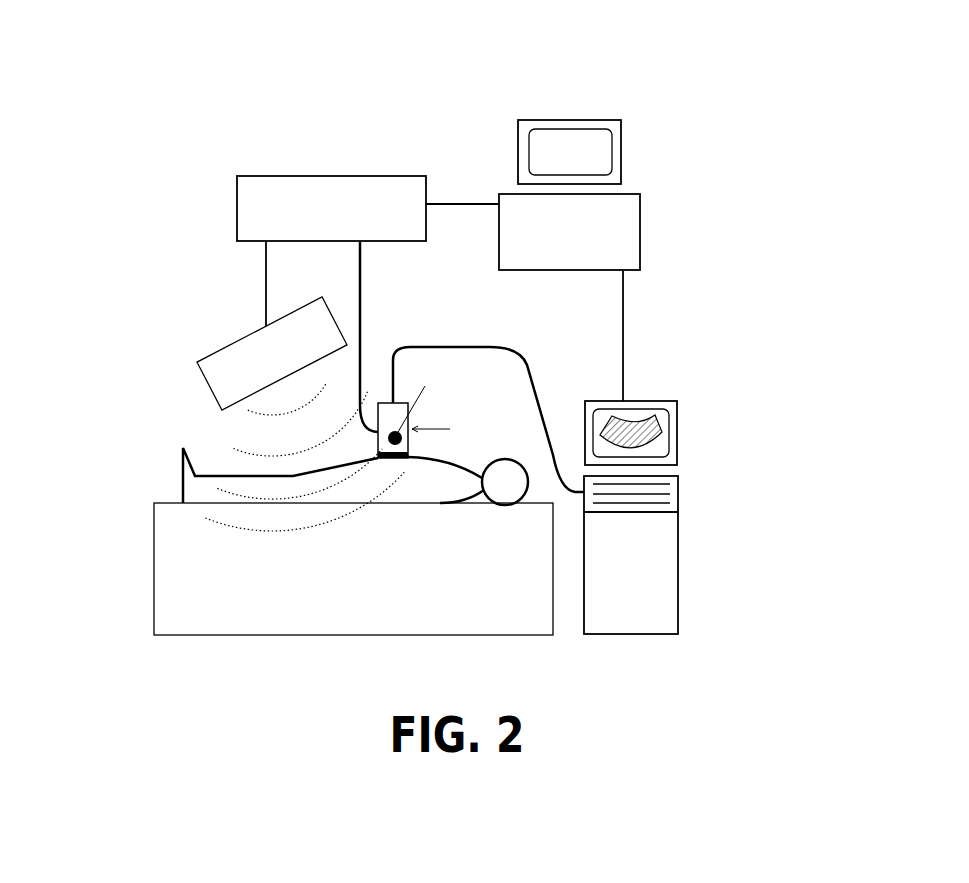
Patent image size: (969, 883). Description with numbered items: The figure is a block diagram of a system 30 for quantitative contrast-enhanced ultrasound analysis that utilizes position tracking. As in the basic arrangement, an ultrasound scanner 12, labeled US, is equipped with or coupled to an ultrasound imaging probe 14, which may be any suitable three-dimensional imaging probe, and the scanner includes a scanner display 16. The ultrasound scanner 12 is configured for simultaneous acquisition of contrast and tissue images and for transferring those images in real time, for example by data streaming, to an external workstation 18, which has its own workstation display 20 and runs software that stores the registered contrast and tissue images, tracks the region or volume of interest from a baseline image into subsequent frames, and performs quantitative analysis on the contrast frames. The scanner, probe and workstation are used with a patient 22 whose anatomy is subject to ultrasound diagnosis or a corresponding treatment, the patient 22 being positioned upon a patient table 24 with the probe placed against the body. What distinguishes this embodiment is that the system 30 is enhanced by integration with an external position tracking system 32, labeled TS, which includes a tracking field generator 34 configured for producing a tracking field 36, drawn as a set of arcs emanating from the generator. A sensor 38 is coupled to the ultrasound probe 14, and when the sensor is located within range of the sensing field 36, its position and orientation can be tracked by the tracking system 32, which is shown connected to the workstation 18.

The ultrasound scanner 12 is at (666, 549).
The ultrasound imaging probe 14 is at (405, 447).
The scanner display 16 is at (666, 422).
The workstation 18 is at (632, 232).
The workstation display 20 is at (600, 148).
The patient 22 is at (198, 490).
The patient table 24 is at (173, 560).
The system 30 is at (445, 35).
The position tracking system 32 is at (245, 214).
The tracking field generator 34 is at (227, 350).
The tracking field 36 is at (286, 439).
The sensor 38 is at (397, 435).